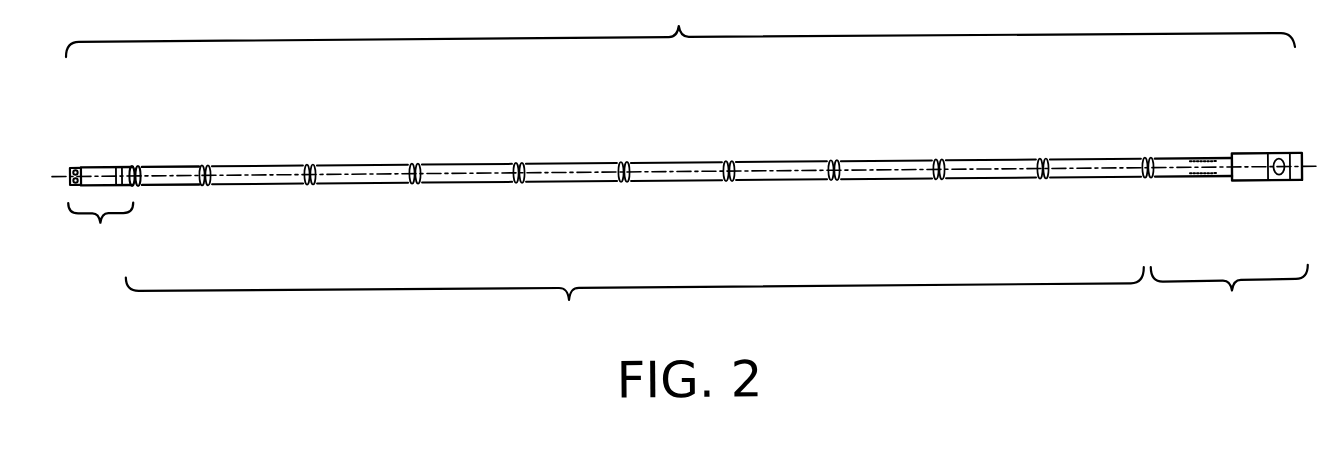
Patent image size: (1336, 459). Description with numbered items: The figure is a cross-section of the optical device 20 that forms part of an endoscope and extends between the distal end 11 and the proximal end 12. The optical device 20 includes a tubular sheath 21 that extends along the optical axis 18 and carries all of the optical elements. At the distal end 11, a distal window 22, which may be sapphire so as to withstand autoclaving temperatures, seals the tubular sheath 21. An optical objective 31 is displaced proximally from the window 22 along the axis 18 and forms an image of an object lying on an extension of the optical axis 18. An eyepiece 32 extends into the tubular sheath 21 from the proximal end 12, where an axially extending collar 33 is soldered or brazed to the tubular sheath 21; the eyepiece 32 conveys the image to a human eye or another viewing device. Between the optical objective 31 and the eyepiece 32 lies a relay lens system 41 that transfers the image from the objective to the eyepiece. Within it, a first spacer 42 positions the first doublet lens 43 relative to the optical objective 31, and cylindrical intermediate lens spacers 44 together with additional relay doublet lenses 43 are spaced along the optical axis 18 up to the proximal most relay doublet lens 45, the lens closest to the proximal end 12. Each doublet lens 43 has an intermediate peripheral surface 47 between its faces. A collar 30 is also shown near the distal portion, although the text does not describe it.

The optical device 20 is at (680, 28).
The distal window 22 is at (72, 176).
The distal end 11 is at (82, 150).
The tubular sheath 21 is at (398, 168).
The proximal end 12 is at (1289, 140).
The collar 30 is at (136, 166).
The optical objective 31 is at (100, 226).
The first spacer 42 is at (176, 186).
The doublet lens 43 is at (209, 166).
The intermediate lens spacer 44 is at (262, 186).
The proximal most relay doublet lens 45 is at (1150, 166).
The intermediate peripheral surface 47 is at (1090, 186).
The axially extending collar 33 is at (1248, 191).
The optical axis 18 is at (1310, 181).
The relay lens system 41 is at (635, 300).
The eyepiece 32 is at (1229, 293).